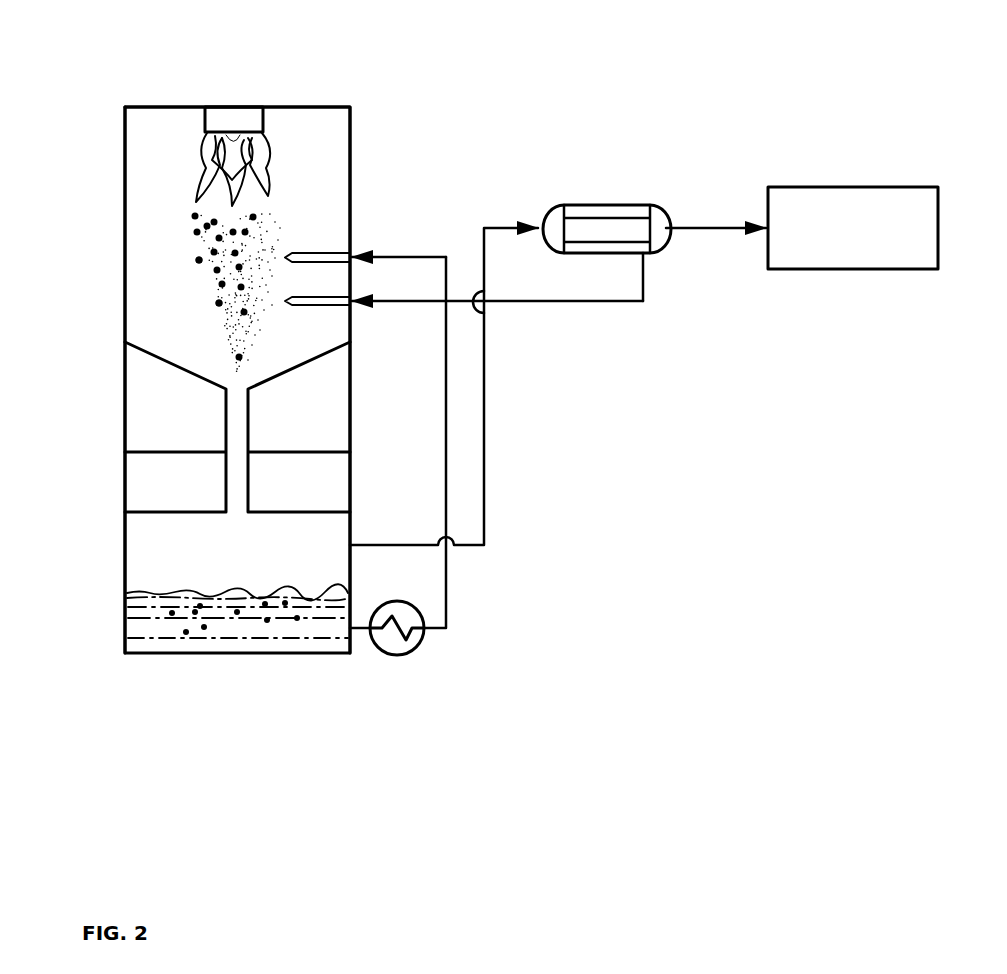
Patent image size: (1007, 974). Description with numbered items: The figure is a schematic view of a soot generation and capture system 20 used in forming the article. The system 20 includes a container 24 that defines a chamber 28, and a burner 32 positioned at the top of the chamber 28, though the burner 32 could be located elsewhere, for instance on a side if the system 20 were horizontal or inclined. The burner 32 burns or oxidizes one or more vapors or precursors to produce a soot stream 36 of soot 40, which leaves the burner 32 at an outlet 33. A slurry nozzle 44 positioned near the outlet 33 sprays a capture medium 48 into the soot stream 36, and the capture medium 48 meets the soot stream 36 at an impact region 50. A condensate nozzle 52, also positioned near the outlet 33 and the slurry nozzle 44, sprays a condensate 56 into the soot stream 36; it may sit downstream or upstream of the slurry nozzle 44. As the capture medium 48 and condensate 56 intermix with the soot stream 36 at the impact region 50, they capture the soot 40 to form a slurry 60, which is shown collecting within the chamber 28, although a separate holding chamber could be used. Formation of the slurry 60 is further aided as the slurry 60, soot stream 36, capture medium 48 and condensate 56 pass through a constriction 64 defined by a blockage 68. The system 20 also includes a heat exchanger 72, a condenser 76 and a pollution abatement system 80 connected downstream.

The soot generation and capture system 20 is at (90, 322).
The container 24 is at (308, 105).
The chamber 28 is at (150, 148).
The burner 32 is at (218, 120).
The outlet 33 is at (222, 135).
The soot stream 36 is at (193, 240).
The soot 40 is at (217, 270).
The slurry nozzle 44 is at (320, 253).
The capture medium 48 is at (272, 252).
The impact region 50 is at (220, 303).
The condensate nozzle 52 is at (310, 302).
The condensate 56 is at (272, 305).
The slurry 60 is at (143, 625).
The constriction 64 is at (230, 460).
The blockage 68 is at (310, 474).
The heat exchanger 72 is at (424, 630).
The condenser 76 is at (666, 212).
The pollution abatement system 80 is at (810, 187).